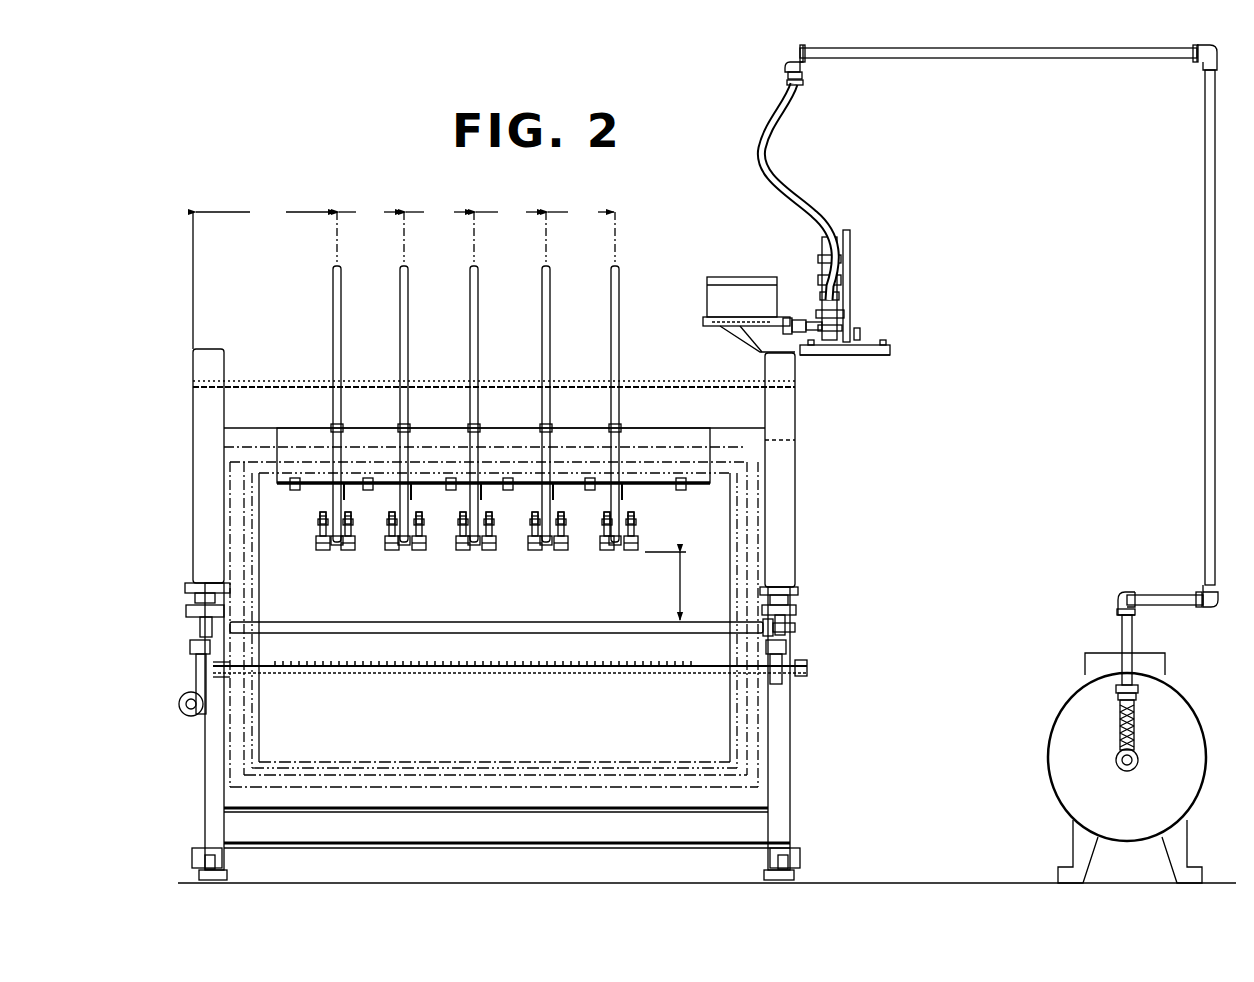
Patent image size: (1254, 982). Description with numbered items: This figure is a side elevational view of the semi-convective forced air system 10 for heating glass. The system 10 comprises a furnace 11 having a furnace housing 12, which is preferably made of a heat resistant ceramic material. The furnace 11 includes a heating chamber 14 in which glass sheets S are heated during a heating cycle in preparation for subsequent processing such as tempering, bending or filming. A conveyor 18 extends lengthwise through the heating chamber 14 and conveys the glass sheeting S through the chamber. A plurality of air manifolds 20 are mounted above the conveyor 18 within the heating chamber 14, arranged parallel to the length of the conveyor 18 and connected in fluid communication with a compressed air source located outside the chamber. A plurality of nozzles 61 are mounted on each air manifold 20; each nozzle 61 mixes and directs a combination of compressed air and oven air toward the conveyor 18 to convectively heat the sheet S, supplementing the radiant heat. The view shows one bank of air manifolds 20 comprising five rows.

The system 10 is at (370, 178).
The furnace 11 is at (816, 544).
The furnace housing 12 is at (787, 456).
The heating chamber 14 is at (512, 587).
The conveyor 18 is at (540, 626).
The air manifold 20 is at (336, 550).
The nozzle 61 is at (318, 530).
The glass sheet S is at (378, 628).